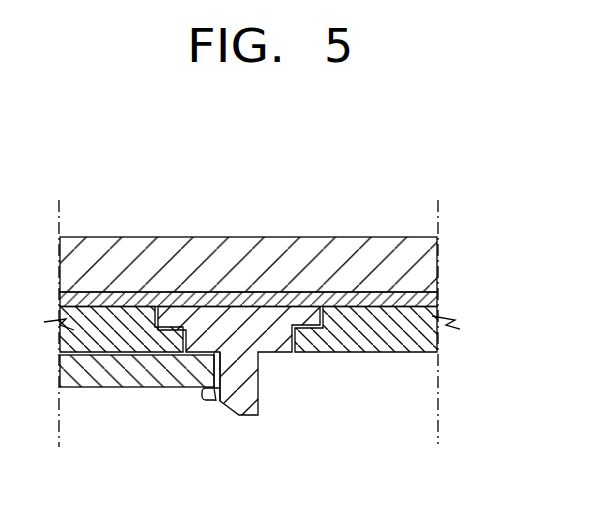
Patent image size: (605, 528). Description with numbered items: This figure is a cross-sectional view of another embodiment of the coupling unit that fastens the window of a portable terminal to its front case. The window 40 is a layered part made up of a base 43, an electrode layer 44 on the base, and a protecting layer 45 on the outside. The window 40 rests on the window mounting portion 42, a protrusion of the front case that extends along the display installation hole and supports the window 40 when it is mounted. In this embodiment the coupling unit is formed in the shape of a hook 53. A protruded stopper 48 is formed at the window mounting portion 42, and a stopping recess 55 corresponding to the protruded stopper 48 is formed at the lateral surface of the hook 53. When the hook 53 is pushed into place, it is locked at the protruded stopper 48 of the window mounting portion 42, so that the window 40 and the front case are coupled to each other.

The window 40 is at (505, 245).
The window mounting portion 42 is at (118, 368).
The base 43 is at (425, 336).
The electrode layer 44 is at (428, 300).
The protecting layer 45 is at (425, 266).
The protruded stopper 48 is at (205, 402).
The hook 53 is at (247, 393).
The stopping recess 55 is at (212, 403).